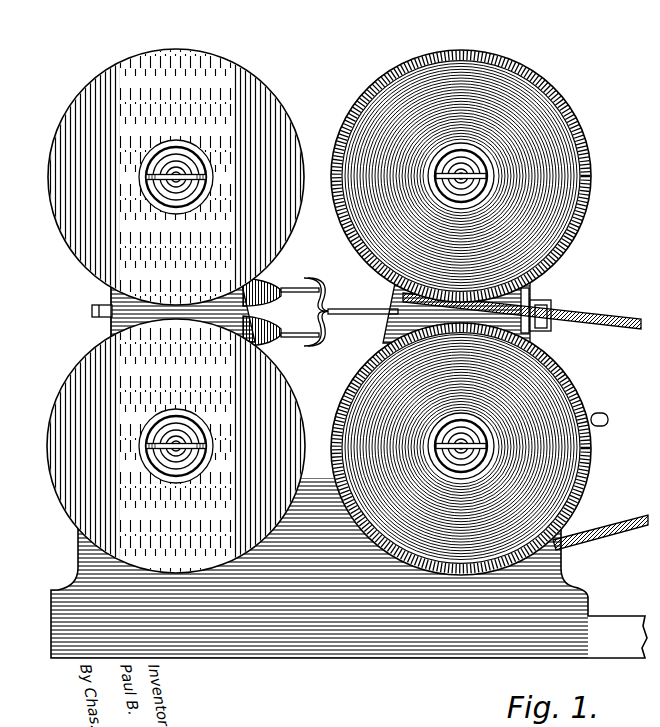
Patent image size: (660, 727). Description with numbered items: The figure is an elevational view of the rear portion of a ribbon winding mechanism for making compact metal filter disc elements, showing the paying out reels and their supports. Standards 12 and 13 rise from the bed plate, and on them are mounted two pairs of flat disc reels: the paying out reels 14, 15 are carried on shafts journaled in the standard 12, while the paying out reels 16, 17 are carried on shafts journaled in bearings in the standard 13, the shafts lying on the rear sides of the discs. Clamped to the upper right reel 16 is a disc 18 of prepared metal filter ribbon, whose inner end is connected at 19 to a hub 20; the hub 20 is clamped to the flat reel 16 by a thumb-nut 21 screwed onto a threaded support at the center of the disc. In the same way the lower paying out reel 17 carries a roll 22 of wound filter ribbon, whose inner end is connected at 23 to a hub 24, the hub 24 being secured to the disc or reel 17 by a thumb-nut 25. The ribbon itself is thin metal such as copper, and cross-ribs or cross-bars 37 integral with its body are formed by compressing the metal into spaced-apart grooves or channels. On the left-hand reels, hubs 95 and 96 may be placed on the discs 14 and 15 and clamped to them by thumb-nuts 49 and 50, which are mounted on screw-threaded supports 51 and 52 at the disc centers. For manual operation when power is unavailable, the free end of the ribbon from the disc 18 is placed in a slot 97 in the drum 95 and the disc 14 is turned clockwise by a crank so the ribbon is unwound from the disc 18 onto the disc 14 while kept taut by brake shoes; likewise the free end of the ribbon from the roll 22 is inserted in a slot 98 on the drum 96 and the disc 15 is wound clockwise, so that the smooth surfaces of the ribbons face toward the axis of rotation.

The standard 12 is at (118, 302).
The standard 13 is at (535, 323).
The paying out reel 14 is at (238, 78).
The paying out reel 15 is at (265, 378).
The paying out reel 16 is at (548, 126).
The paying out reel 17 is at (559, 377).
The disc of prepared metal filter ribbon 18 is at (552, 128).
The connection of ribbon inner end 19 is at (450, 207).
The hub 20 is at (480, 185).
The thumb-nut 21 is at (472, 167).
The roll of wound prepared metal filter ribbon 22 is at (560, 447).
The connection of ribbon inner end 23 is at (455, 474).
The hub 24 is at (487, 451).
The thumb-nut 25 is at (478, 430).
The cross-ribs or cross-bars 37 is at (585, 308).
The thumb-nut 49 is at (187, 170).
The thumb-nut 50 is at (157, 447).
The screw-threaded support 51 is at (176, 165).
The screw-threaded support 52 is at (168, 433).
The hub 95 is at (165, 134).
The hub 96 is at (178, 472).
The slot 97 is at (167, 207).
The slot 98 is at (168, 477).